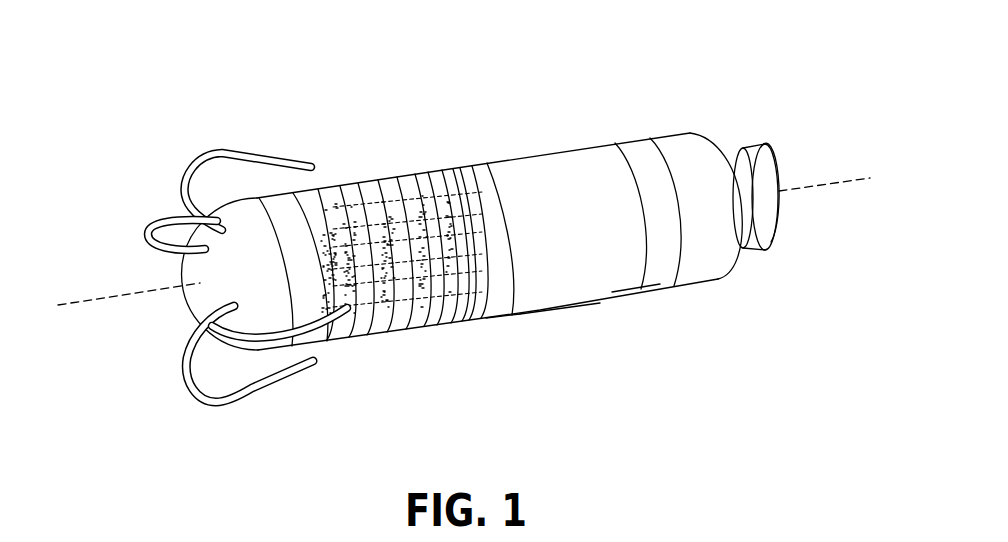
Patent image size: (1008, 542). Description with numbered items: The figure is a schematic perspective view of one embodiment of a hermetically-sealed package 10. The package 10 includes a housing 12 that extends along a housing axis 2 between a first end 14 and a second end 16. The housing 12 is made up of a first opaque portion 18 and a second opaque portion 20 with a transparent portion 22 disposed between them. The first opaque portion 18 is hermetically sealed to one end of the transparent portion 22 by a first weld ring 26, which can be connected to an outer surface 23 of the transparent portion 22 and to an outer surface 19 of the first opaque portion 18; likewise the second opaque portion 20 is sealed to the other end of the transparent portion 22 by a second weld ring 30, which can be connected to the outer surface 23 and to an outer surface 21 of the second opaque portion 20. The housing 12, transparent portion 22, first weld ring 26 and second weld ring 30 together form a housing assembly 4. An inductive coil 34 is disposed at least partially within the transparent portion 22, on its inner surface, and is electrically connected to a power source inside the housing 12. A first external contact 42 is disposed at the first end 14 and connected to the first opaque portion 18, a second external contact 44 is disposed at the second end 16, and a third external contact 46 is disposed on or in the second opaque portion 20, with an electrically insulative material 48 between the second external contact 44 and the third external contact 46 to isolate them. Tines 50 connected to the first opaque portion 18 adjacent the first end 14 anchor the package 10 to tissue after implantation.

The housing axis 2 is at (75, 302).
The housing assembly 4 is at (396, 93).
The hermetically-sealed package 10 is at (517, 63).
The housing 12 is at (567, 373).
The first end 14 is at (149, 305).
The second end 16 is at (761, 283).
The first opaque portion 18 is at (230, 203).
The outer surface 19 is at (185, 274).
The second opaque portion 20 is at (545, 153).
The outer surface 21 is at (557, 274).
The transparent portion 22 is at (391, 152).
The outer surface 23 is at (352, 343).
The first weld ring 26 is at (302, 363).
The second weld ring 30 is at (488, 322).
The inductive coil 34 is at (390, 318).
The first external contact 42 is at (202, 306).
The second external contact 44 is at (690, 130).
The third external contact 46 is at (620, 273).
The electrically insulative material 48 is at (628, 141).
The tines 50 is at (261, 400).